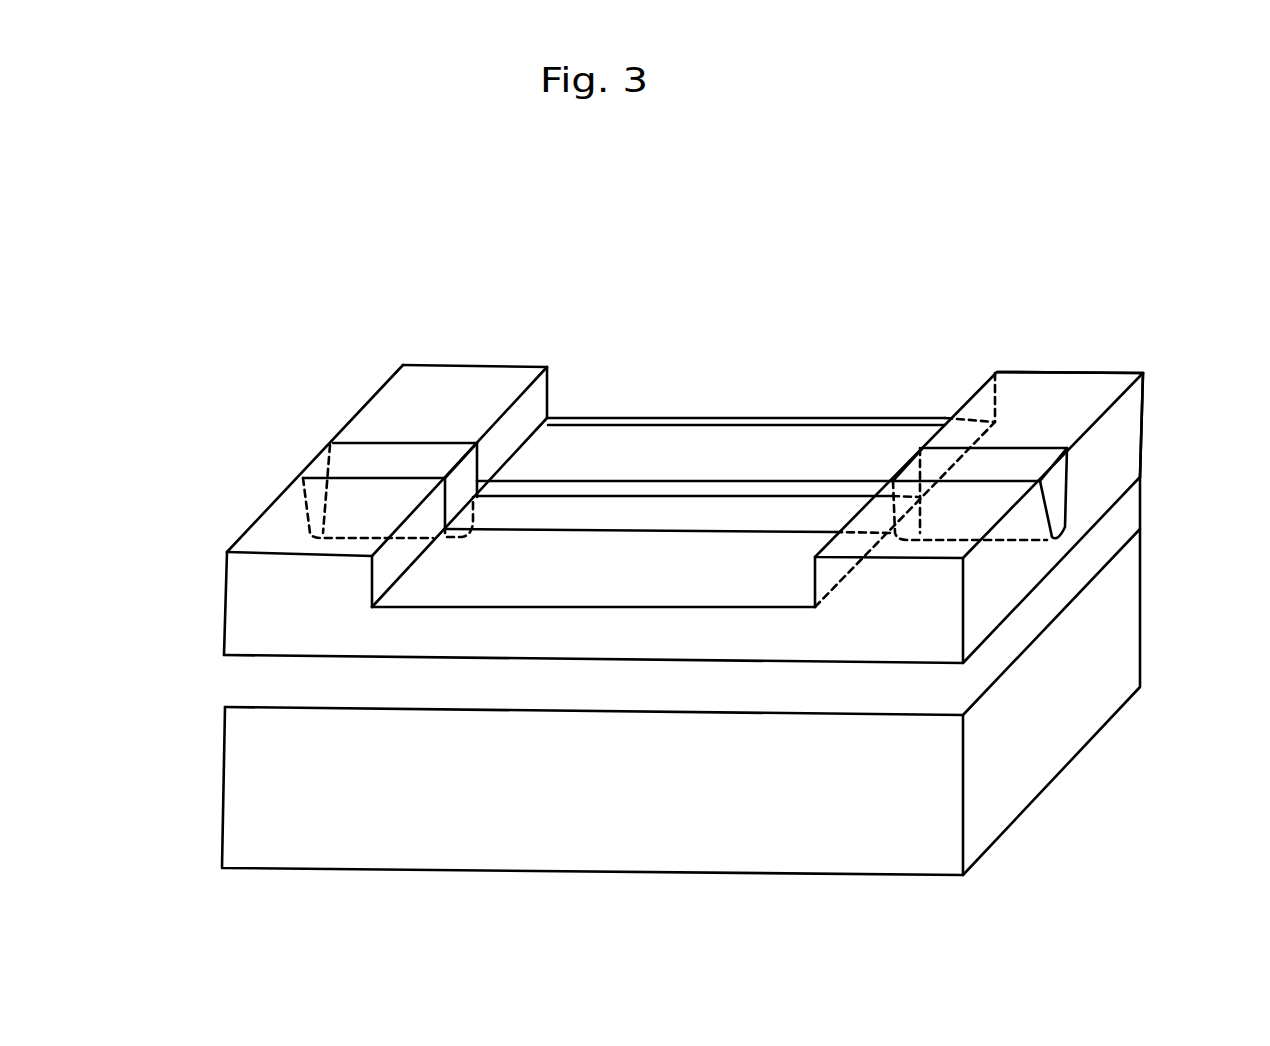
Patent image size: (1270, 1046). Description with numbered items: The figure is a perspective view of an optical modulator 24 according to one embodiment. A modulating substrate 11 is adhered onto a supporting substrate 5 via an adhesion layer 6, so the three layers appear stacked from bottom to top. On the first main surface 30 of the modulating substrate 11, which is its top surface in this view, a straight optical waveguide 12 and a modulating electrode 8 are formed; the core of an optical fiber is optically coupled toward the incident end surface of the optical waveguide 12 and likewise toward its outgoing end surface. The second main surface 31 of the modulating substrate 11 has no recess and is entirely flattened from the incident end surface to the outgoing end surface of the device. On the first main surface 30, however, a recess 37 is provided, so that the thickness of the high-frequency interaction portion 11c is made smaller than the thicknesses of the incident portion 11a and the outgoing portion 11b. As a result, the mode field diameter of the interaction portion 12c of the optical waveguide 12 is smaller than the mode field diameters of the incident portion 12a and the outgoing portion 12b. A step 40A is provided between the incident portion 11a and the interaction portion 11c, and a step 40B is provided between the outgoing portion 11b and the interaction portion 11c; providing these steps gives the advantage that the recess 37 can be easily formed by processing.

The supporting substrate 5 is at (243, 802).
The adhesion layer 6 is at (243, 692).
The modulating electrode 8 is at (775, 463).
The modulating substrate 11 is at (240, 620).
The incident portion 11a is at (1088, 383).
The outgoing portion 11b is at (472, 385).
The high-frequency interaction portion 11c is at (992, 342).
The optical waveguide 12 is at (1050, 492).
The incident portion of the optical waveguide 12a is at (1005, 462).
The outgoing portion of the optical waveguide 12b is at (385, 452).
The interaction portion of the optical waveguide 12c is at (678, 513).
The optical modulator 24 is at (1058, 357).
The first main surface 30 is at (275, 533).
The second main surface 31 is at (368, 658).
The recess 37 is at (558, 392).
The step 40A is at (958, 405).
The step 40B is at (427, 542).